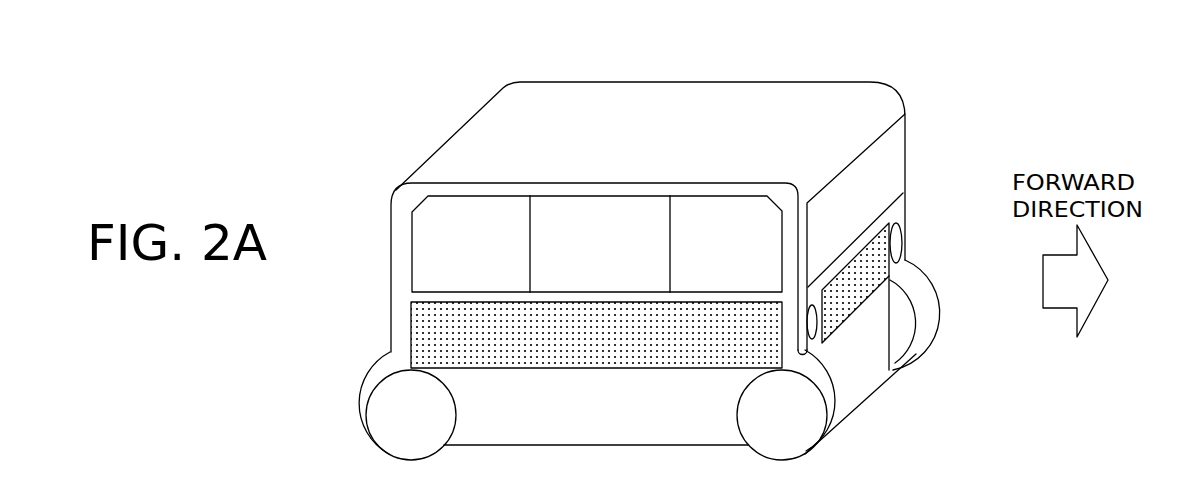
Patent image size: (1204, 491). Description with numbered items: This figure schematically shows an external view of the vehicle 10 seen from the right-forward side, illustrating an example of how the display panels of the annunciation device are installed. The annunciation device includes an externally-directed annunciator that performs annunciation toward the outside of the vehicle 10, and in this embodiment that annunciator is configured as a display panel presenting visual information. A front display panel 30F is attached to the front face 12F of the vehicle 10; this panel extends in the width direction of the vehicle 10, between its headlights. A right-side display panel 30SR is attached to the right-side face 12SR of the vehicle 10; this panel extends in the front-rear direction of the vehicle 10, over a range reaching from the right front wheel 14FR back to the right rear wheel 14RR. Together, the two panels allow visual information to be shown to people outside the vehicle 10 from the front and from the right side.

The vehicle 10 is at (682, 100).
The right-side face 12SR is at (558, 410).
The front face 12F is at (865, 340).
The right rear wheel 14RR is at (383, 415).
The right front wheel 14FR is at (803, 418).
The right-side display panel 30SR is at (438, 335).
The front display panel 30F is at (860, 283).